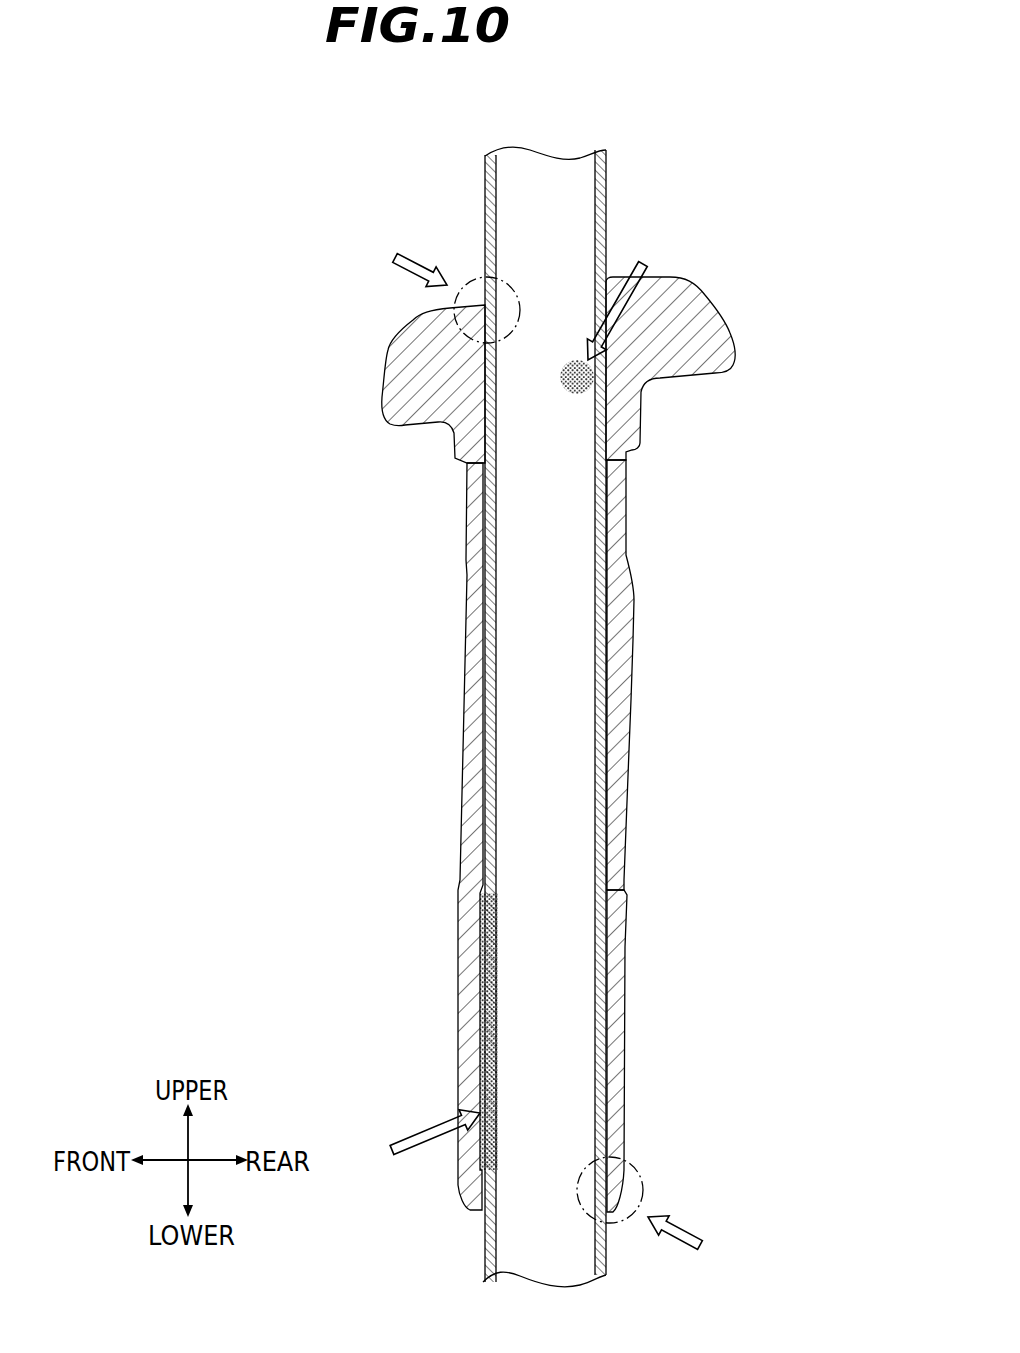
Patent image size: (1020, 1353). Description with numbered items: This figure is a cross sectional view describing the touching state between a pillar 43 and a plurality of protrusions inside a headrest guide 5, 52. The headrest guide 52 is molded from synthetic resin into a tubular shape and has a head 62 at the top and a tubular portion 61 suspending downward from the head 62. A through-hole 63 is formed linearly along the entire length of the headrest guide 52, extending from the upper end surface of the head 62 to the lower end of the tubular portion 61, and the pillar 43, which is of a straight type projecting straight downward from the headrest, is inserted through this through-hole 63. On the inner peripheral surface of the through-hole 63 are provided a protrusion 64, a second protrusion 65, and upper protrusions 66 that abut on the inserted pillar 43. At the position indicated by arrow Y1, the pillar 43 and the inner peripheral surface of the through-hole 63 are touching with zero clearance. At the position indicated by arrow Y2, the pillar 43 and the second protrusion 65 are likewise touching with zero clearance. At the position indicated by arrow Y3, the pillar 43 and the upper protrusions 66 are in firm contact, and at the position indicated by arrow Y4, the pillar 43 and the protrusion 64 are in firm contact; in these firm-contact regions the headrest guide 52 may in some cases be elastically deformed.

The pillar 43 is at (605, 203).
The seal member 5 is at (720, 364).
The headrest guide 52 is at (715, 310).
The head 62 is at (407, 383).
The tubular portion 61 is at (630, 687).
The through-hole 63 is at (610, 788).
The protrusion 64 is at (483, 1052).
The second protrusion 65 is at (607, 1042).
The upper protrusions 66 is at (580, 395).
The arrow Y1 is at (417, 262).
The arrow Y2 is at (678, 1225).
The arrow Y3 is at (643, 264).
The arrow Y4 is at (425, 1147).